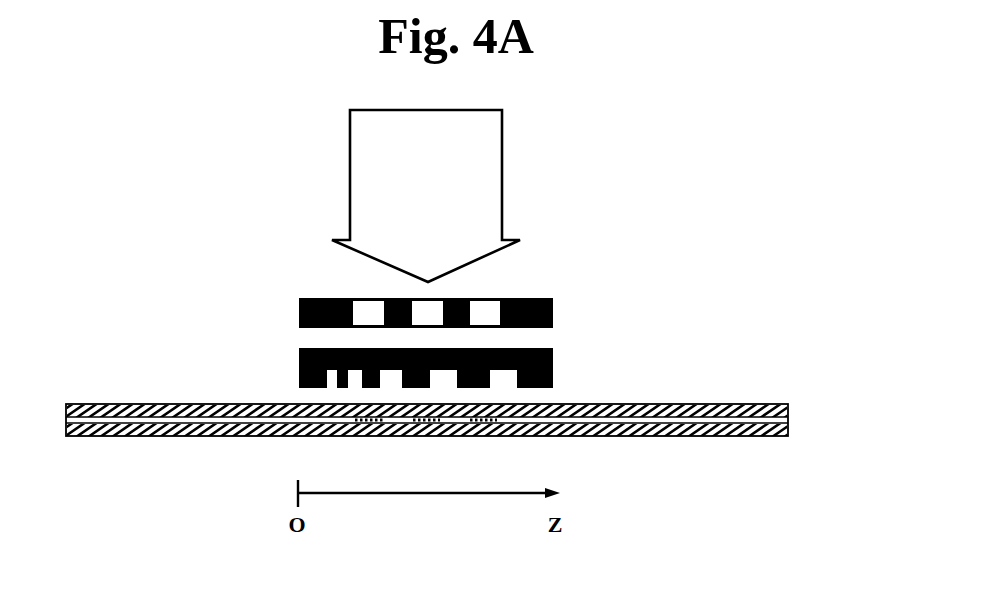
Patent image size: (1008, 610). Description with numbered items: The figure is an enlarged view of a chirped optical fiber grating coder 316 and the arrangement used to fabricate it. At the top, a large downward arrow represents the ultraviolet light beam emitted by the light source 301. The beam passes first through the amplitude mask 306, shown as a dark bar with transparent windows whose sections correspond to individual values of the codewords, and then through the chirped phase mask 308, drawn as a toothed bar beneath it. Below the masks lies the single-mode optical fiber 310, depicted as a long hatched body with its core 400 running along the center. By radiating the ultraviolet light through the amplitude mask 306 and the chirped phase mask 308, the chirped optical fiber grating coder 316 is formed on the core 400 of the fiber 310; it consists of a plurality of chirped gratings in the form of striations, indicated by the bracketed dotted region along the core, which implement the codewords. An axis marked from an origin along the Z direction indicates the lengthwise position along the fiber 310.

The light source 301 is at (502, 170).
The amplitude mask 306 is at (553, 312).
The chirped phase mask 308 is at (553, 365).
The core 400 is at (788, 417).
The single-mode optical fiber 310 is at (755, 437).
The chirped optical fiber grating coder 316 is at (518, 442).